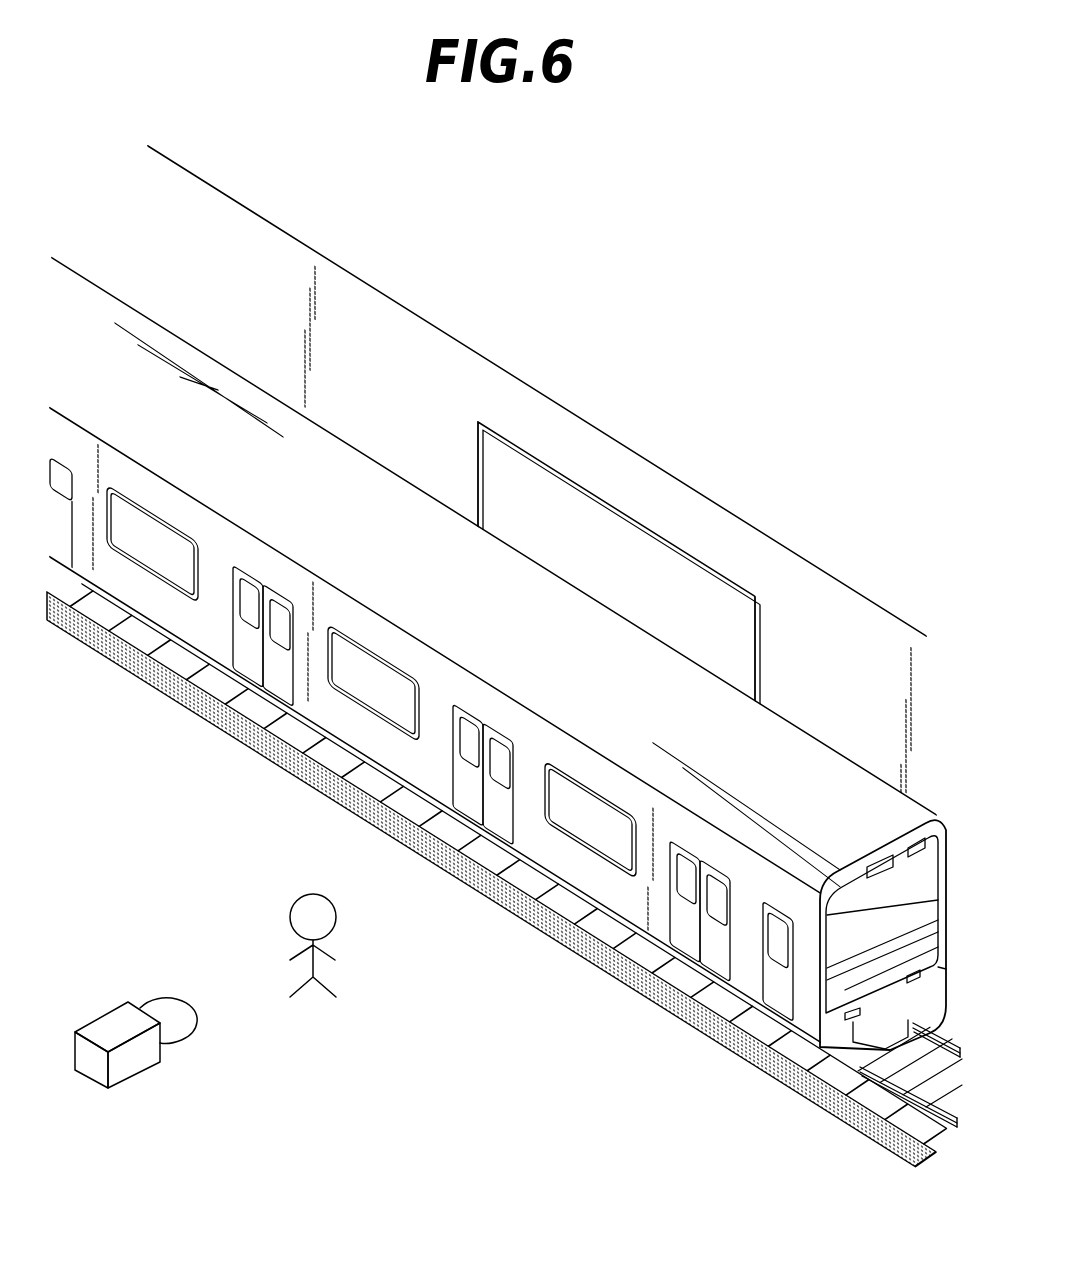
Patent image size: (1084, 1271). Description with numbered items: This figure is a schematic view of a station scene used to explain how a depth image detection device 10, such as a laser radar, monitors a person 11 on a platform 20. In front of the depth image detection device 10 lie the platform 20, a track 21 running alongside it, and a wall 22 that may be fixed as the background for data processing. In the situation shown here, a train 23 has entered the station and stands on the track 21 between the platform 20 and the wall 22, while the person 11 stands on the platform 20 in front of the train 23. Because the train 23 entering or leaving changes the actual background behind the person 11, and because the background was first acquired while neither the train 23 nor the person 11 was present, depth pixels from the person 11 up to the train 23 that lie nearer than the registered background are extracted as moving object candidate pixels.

The depth image detection device 10 is at (132, 1062).
The person 11 is at (297, 917).
The platform 20 is at (707, 1093).
The track 21 is at (897, 1078).
The wall 22 is at (795, 580).
The train 23 is at (818, 772).